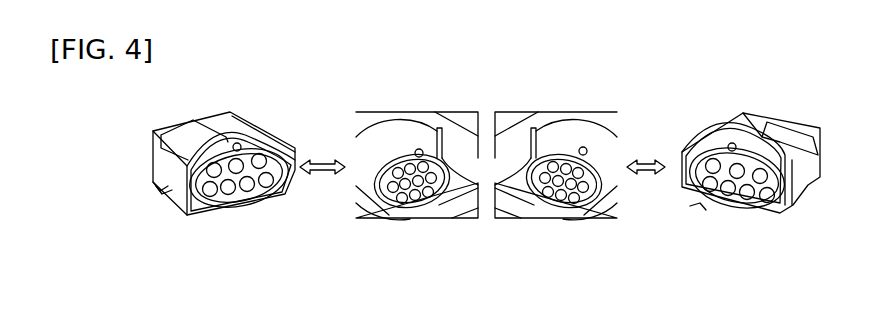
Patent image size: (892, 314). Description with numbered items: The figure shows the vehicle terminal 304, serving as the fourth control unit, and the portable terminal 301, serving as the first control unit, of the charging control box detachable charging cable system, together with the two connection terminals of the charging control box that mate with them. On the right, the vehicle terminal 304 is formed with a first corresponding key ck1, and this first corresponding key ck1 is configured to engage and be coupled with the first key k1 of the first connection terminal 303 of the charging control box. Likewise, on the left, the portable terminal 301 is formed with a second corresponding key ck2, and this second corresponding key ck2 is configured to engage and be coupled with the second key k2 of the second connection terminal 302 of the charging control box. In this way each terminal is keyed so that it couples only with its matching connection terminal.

The portable terminal 301 is at (224, 186).
The second connection terminal 302 is at (417, 186).
The first connection terminal 303 is at (556, 186).
The vehicle terminal 304 is at (751, 187).
The first key k1 is at (585, 148).
The second key k2 is at (422, 150).
The first corresponding key ck1 is at (700, 205).
The second corresponding key ck2 is at (163, 194).